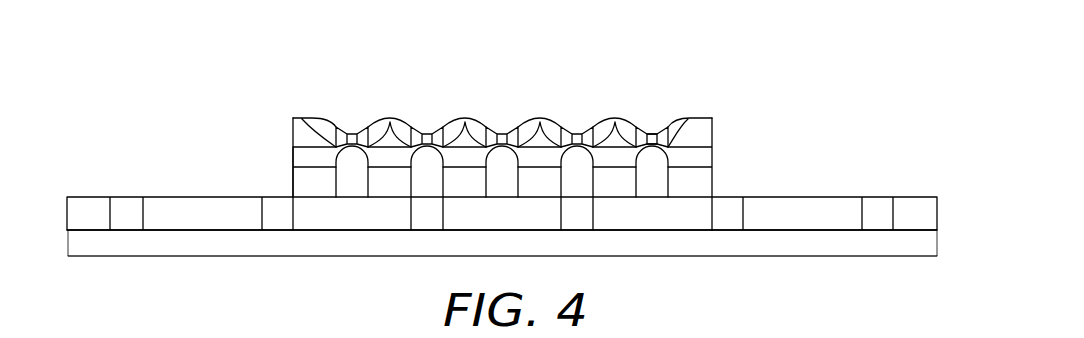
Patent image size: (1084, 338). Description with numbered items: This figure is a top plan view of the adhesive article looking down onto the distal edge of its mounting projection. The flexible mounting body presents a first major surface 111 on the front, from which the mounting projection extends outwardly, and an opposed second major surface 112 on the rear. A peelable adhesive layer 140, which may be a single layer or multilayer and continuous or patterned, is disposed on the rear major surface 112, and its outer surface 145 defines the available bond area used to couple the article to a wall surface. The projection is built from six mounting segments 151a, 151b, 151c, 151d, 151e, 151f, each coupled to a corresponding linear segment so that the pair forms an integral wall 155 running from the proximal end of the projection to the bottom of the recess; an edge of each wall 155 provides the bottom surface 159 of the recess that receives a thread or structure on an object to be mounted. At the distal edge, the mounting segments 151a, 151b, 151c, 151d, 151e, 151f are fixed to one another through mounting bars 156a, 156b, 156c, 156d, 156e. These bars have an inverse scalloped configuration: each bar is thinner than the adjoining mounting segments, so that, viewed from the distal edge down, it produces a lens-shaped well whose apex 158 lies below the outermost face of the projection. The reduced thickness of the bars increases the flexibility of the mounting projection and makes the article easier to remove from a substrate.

The first major surface 111 is at (900, 196).
The second major surface 112 is at (175, 232).
The adhesive layer 140 is at (833, 247).
The outer surface of the adhesive layer 145 is at (392, 257).
The mounting segment 151a is at (702, 137).
The mounting segment 151b is at (618, 137).
The mounting segment 151c is at (541, 123).
The mounting segment 151d is at (467, 122).
The mounting segment 151e is at (390, 124).
The mounting segment 151f is at (322, 143).
The wall 155 is at (297, 177).
The mounting bar 156a is at (664, 131).
The mounting bar 156b is at (578, 134).
The mounting bar 156c is at (502, 134).
The mounting bar 156d is at (427, 134).
The mounting bar 156e is at (347, 134).
The apex 158 is at (653, 138).
The bottom surface of the recess 159 is at (700, 170).